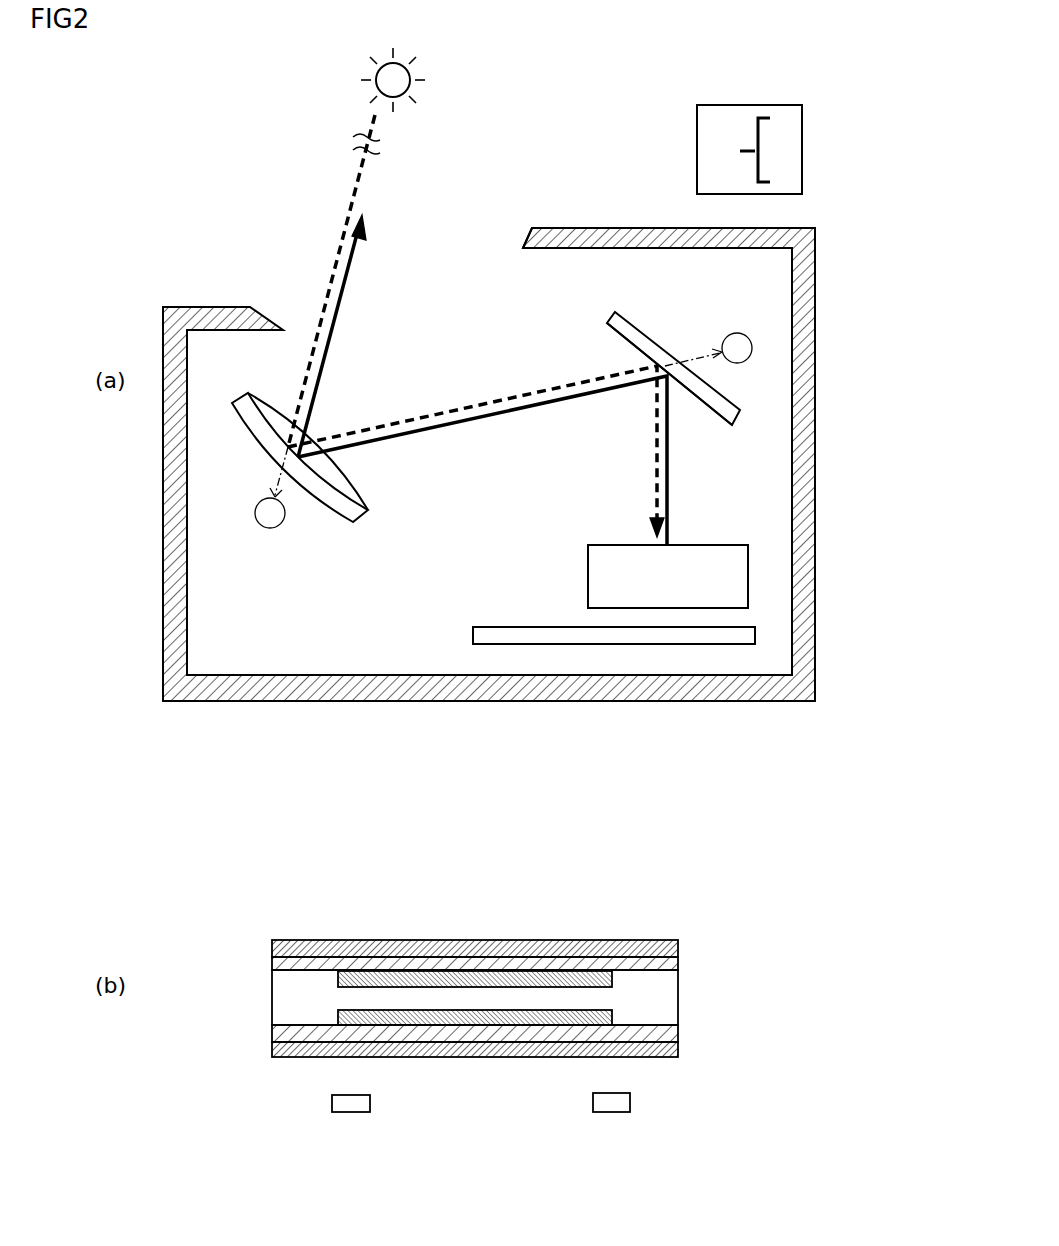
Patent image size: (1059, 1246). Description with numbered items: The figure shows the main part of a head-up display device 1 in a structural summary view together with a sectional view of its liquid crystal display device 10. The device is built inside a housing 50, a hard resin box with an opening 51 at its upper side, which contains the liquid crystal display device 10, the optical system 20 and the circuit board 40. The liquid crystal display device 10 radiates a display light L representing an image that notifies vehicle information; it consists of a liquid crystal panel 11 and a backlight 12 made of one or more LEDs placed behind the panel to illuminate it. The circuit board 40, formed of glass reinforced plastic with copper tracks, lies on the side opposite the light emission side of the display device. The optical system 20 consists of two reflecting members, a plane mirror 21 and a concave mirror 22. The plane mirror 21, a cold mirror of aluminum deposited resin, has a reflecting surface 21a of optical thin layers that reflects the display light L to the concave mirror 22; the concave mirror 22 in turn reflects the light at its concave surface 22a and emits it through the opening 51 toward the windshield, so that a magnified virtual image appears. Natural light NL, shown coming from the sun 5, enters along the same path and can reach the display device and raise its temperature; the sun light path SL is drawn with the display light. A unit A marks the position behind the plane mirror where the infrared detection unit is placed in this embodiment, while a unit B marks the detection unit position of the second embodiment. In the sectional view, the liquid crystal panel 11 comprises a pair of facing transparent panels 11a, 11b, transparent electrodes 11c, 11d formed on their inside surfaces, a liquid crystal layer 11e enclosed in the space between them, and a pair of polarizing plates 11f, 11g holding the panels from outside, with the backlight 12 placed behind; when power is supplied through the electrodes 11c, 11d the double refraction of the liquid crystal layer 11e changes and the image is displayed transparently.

The head-up display device 1 is at (198, 193).
The sun 5 is at (435, 88).
The liquid crystal display device 10 is at (588, 573).
The liquid crystal panel 11 is at (502, 981).
The transparent panel 11a is at (678, 963).
The transparent panel 11b is at (678, 1036).
The transparent electrode 11c is at (612, 978).
The transparent electrode 11d is at (612, 1016).
The liquid crystal layer 11e is at (290, 1002).
The polarizing plate 11f is at (272, 946).
The polarizing plate 11g is at (272, 1052).
The backlight 12 is at (372, 1103).
The optical system 20 is at (749, 149).
The plane mirror 21 is at (643, 334).
The reflecting surface 21a is at (622, 343).
The concave mirror 22 is at (340, 518).
The reflecting surface of second mirror 22a is at (333, 481).
The circuit board 40 is at (473, 635).
The housing 50 is at (297, 702).
The opening 51 is at (528, 230).
The unit A is at (708, 349).
The unit B is at (271, 487).
The display light L is at (337, 308).
The natural light NL is at (352, 190).
The light path SL is at (655, 456).